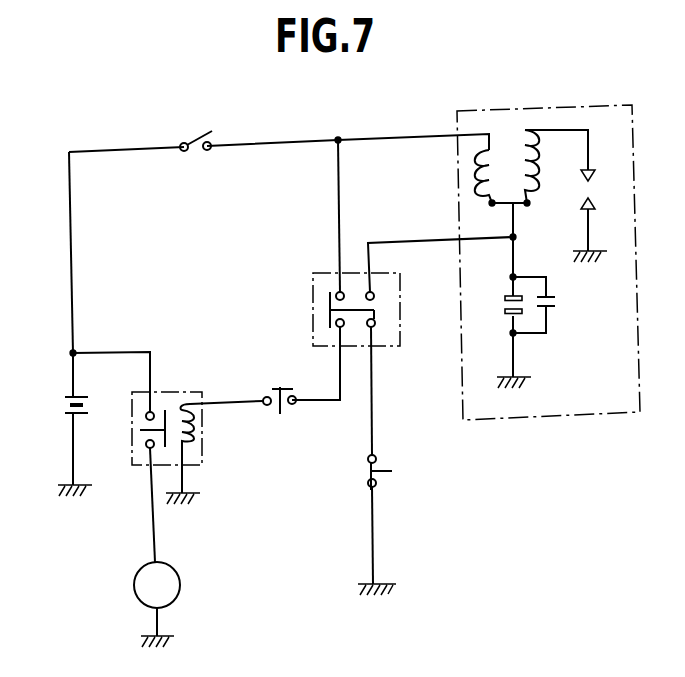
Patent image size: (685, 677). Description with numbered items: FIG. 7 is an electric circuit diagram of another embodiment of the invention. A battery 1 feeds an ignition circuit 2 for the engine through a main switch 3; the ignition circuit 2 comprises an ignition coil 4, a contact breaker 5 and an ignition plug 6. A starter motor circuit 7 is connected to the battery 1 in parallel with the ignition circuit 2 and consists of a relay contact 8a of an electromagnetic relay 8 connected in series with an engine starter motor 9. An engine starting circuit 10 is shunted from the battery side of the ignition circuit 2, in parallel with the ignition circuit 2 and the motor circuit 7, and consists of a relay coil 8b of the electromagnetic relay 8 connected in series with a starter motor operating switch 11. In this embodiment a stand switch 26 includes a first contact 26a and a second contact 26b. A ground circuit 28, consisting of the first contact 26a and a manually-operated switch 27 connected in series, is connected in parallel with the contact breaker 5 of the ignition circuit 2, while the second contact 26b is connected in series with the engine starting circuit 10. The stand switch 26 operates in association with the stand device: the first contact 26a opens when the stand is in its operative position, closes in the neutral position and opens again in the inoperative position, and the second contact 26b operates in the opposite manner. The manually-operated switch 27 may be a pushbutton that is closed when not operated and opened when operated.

The battery 1 is at (62, 412).
The ignition circuit 2 is at (518, 108).
The main switch 3 is at (193, 140).
The ignition coil 4 is at (478, 184).
The contact breaker 5 is at (505, 311).
The ignition plug 6 is at (592, 190).
The starter motor circuit 7 is at (113, 352).
The electromagnetic relay 8 is at (174, 392).
The relay contact 8a is at (140, 431).
The relay coil 8b is at (194, 430).
The engine starter motor 9 is at (134, 586).
The engine starting circuit 10 is at (338, 210).
The starter motor operating switch 11 is at (280, 388).
The stand switch 26 is at (366, 293).
The first contact 26a is at (376, 318).
The second contact 26b is at (330, 310).
The manually-operated switch 27 is at (366, 478).
The ground circuit 28 is at (384, 243).